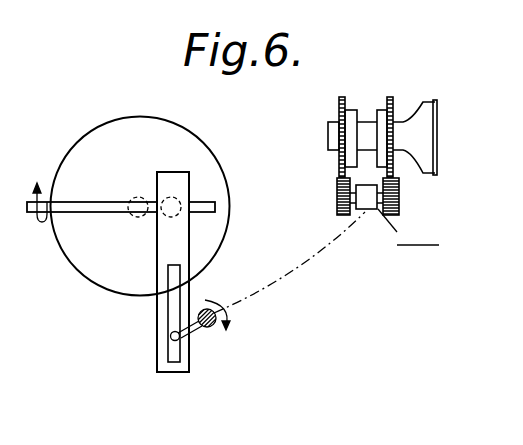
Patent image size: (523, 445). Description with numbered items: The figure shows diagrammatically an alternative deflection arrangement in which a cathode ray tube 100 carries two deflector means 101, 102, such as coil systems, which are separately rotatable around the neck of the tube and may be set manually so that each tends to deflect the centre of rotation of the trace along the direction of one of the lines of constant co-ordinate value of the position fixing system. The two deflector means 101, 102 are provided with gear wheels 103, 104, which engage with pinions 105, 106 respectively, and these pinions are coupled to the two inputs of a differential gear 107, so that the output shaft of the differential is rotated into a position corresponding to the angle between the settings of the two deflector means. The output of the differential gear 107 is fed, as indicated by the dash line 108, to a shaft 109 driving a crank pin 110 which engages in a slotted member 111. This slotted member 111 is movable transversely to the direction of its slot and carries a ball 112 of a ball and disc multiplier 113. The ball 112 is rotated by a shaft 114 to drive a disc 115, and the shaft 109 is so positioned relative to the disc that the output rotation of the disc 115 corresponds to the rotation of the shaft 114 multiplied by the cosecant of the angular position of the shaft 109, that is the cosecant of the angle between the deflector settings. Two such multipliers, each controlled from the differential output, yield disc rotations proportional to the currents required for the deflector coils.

The cathode ray tube 100 is at (426, 156).
The deflector means 101 is at (357, 112).
The deflector means 102 is at (389, 101).
The gear wheel 103 is at (339, 108).
The gear wheel 104 is at (393, 100).
The pinion 105 is at (337, 201).
The pinion 106 is at (399, 198).
The differential gear 107 is at (358, 210).
The dash line 108 is at (268, 292).
The shaft 109 is at (208, 305).
The crank pin 110 is at (184, 334).
The slotted member 111 is at (165, 329).
The ball 112 is at (178, 202).
The ball and disc multiplier 113 is at (94, 121).
The shaft 114 is at (45, 200).
The disc 115 is at (145, 117).